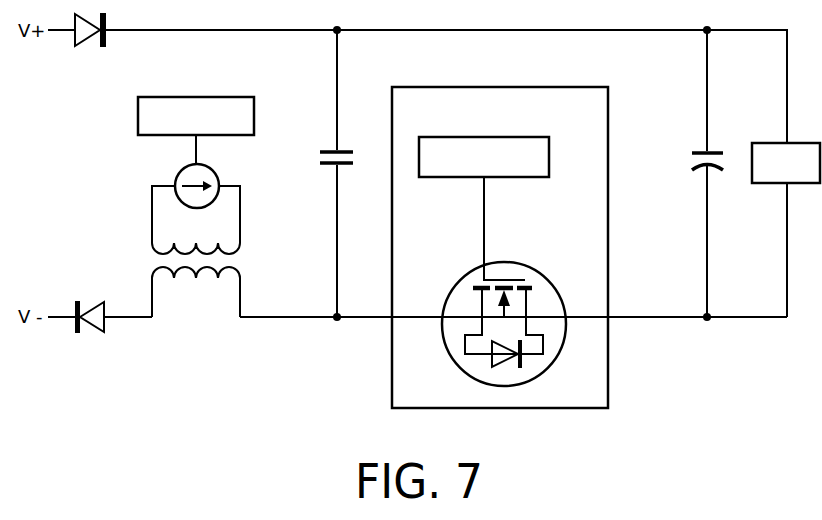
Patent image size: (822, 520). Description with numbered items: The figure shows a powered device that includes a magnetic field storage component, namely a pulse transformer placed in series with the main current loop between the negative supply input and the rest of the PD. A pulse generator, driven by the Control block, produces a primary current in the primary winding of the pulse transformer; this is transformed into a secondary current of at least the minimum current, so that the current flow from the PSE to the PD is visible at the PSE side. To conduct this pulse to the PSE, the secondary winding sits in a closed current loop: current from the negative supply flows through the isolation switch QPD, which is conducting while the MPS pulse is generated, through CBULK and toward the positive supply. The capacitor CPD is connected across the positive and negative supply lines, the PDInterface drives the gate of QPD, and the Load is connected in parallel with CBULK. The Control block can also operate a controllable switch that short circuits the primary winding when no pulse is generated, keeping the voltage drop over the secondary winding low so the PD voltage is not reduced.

The control block Control is at (196, 152).
The PD capacitor CPD is at (320, 173).
The bulk capacitor CBULK is at (680, 173).
The load Load is at (786, 163).
The PD interface PDInterface is at (484, 157).
The isolation switch QPD is at (511, 290).